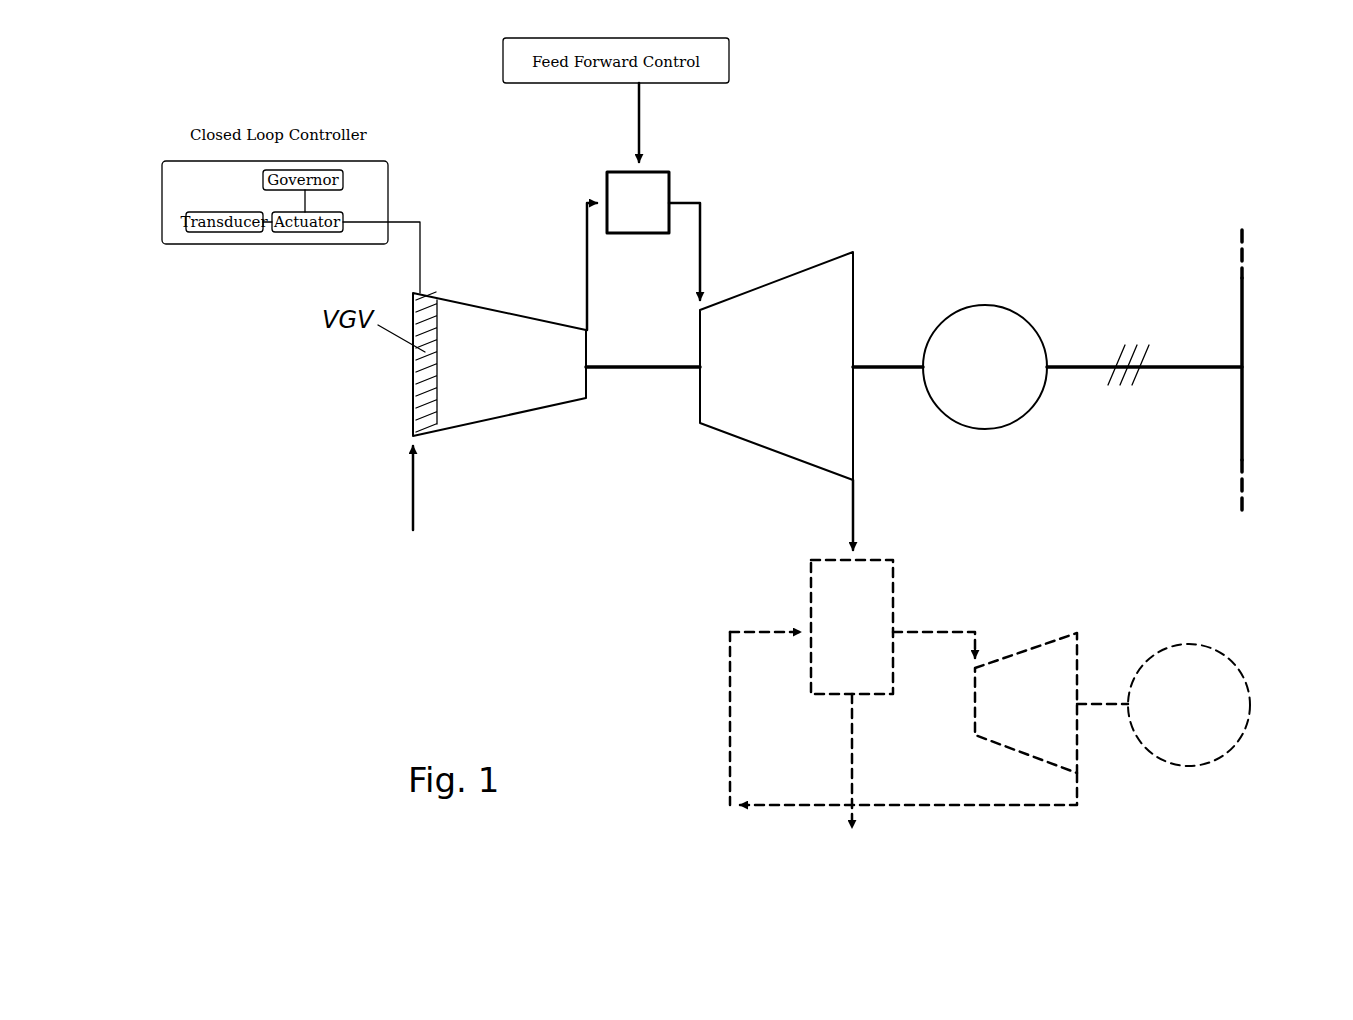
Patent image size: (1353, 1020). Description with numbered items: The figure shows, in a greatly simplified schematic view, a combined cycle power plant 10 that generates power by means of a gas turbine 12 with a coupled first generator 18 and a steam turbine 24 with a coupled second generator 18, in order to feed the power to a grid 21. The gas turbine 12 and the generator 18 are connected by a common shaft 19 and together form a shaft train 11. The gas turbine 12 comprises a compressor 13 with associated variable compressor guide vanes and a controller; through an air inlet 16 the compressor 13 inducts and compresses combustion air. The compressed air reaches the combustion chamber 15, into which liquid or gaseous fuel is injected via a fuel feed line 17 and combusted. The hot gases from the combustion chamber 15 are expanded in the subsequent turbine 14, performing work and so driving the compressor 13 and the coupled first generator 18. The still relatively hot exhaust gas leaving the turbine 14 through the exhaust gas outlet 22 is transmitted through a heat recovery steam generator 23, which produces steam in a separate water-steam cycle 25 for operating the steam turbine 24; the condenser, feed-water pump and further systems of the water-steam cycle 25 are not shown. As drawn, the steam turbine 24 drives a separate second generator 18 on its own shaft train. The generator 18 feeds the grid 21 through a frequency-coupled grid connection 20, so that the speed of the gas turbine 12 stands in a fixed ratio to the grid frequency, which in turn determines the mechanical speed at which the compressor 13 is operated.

The power plant 10 is at (1212, 610).
The shaft train 11 is at (818, 184).
The gas turbine 12 is at (643, 425).
The compressor 13 is at (499, 364).
The turbine 14 is at (776, 366).
The combustion chamber 15 is at (617, 192).
The air inlet 16 is at (415, 488).
The fuel feed line 17 is at (639, 140).
The generator 18 is at (1086, 535).
The shaft 19 is at (874, 363).
The grid connection 20 is at (1088, 362).
The grid 21 is at (1243, 315).
The exhaust gas outlet 22 is at (855, 518).
The heat recovery steam generator 23 is at (811, 694).
The steam turbine 24 is at (1010, 702).
The water-steam cycle 25 is at (778, 805).